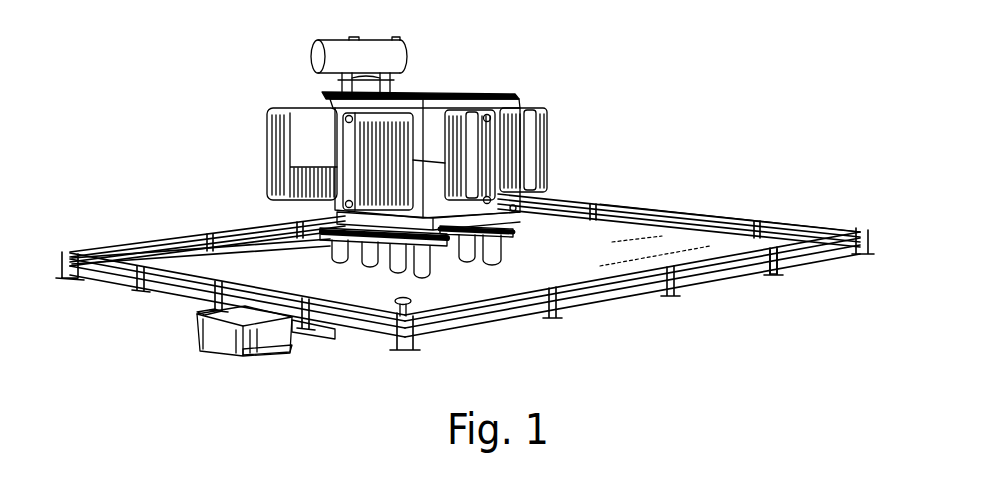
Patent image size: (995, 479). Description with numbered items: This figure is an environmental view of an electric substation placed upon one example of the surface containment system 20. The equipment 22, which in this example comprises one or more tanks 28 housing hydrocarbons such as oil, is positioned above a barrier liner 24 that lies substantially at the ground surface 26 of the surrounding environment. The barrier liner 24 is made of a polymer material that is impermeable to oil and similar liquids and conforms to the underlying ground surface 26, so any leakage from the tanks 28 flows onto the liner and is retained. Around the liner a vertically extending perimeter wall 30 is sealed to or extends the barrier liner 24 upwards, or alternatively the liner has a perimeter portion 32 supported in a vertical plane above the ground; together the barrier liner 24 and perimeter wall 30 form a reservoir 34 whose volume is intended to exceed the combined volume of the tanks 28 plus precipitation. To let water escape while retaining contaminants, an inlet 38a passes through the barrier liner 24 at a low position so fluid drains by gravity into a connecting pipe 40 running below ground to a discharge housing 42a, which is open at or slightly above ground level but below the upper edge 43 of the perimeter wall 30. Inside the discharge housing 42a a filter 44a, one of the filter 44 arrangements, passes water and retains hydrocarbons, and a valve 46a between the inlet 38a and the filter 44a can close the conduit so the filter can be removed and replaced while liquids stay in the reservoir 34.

The surface containment system 20 is at (642, 148).
The equipment 22 is at (480, 107).
The barrier liner 24 is at (720, 245).
The ground surface 26 is at (543, 343).
The tank 28 is at (442, 102).
The perimeter wall 30 is at (766, 272).
The perimeter portion 32 is at (712, 210).
The reservoir 34 is at (220, 200).
The inlet 38a is at (389, 303).
The connecting pipe 40 is at (322, 338).
The discharge housing 42a is at (276, 352).
The upper edge 43 is at (647, 264).
The filter 44 is at (207, 302).
The filter 44a is at (213, 313).
The valve 46a is at (195, 313).